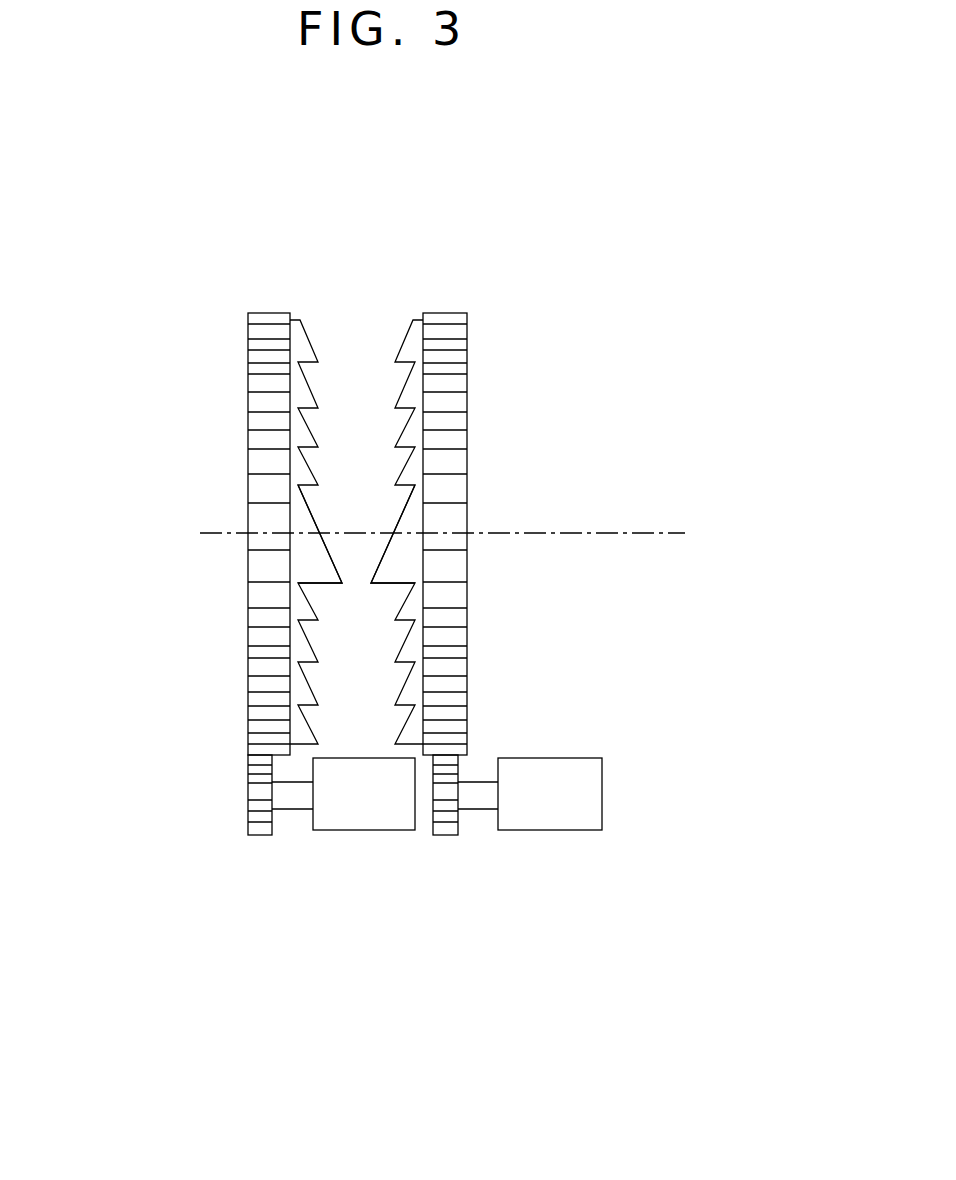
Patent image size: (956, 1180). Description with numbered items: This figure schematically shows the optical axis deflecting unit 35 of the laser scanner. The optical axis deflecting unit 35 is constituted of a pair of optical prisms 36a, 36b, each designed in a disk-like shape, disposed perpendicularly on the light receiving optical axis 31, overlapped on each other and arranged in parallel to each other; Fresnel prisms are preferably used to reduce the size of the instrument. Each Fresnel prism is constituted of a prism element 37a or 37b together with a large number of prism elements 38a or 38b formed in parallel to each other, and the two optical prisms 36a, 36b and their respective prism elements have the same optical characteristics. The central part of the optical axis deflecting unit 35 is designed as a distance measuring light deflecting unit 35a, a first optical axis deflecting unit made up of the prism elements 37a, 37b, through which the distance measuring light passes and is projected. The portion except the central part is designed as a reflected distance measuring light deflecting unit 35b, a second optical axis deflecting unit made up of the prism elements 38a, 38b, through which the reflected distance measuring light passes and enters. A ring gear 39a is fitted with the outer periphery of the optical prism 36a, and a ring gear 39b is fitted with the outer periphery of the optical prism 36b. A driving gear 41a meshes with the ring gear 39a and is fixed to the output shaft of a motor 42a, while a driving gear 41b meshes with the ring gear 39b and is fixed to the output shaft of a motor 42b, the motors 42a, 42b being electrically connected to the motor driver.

The optical axis deflecting unit 35 is at (366, 133).
The optical prism 36a is at (265, 312).
The optical prism 36b is at (447, 312).
The prism elements 38a is at (310, 340).
The prism elements 38b is at (395, 340).
The prism element 37a is at (317, 521).
The prism element 37b is at (385, 555).
The reflected distance measuring light deflecting unit 35b is at (248, 392).
The distance measuring light deflecting unit 35a is at (248, 550).
The light receiving optical axis 31 is at (548, 535).
The ring gear 39a is at (263, 690).
The ring gear 39b is at (447, 658).
The driving gear 41a is at (253, 837).
The driving gear 41b is at (445, 837).
The motor 42a is at (335, 837).
The motor 42b is at (517, 837).